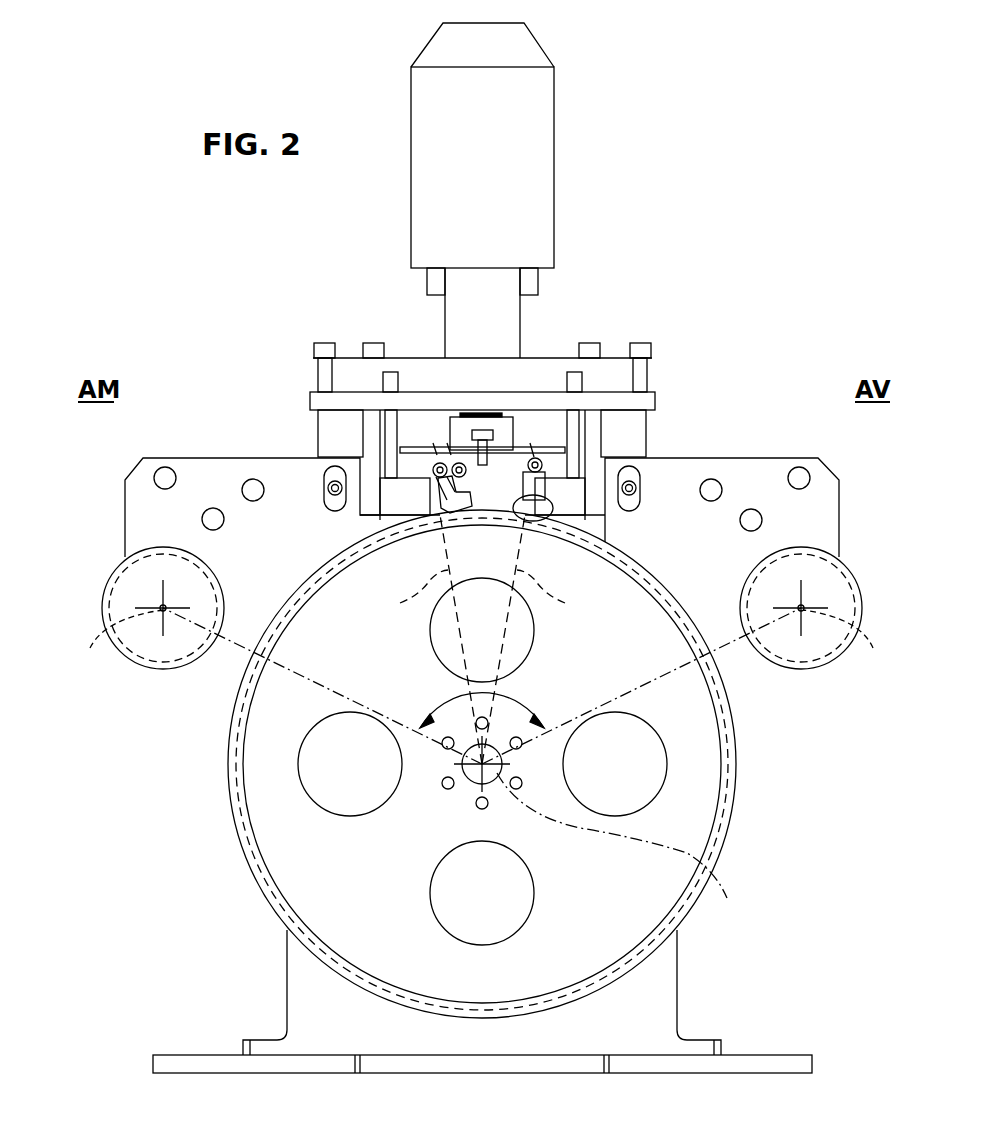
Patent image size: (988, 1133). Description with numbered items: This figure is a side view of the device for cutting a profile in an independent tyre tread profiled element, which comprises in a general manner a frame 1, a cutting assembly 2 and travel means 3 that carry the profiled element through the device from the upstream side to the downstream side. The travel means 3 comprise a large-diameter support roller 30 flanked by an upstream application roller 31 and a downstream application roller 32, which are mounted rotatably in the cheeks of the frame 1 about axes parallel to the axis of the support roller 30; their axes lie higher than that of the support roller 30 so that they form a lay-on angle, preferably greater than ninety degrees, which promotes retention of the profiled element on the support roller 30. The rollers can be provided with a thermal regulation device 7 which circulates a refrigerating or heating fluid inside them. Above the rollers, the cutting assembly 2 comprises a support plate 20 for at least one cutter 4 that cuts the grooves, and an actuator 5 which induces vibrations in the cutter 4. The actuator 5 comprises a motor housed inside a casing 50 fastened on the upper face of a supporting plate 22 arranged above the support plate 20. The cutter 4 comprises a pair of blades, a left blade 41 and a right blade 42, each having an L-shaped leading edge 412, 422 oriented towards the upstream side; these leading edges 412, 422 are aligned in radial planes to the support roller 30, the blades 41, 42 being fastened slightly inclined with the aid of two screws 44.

The frame 1 is at (712, 990).
The cutting assembly 2 is at (665, 334).
The travel means 3 is at (225, 854).
The cutter 4 is at (482, 491).
The actuator 5 is at (580, 212).
The thermal regulation device 7 is at (163, 667).
The support plate 20 is at (551, 447).
The supporting plate 22 is at (348, 400).
The support roller 30 is at (700, 760).
The upstream application roller 31 is at (120, 603).
The downstream application roller 32 is at (845, 606).
The left blade 41 is at (548, 492).
The right blade 42 is at (445, 508).
The screws 44 is at (440, 463).
The casing 50 is at (532, 163).
The leading edge 412 is at (542, 506).
The leading edge 422 is at (445, 497).